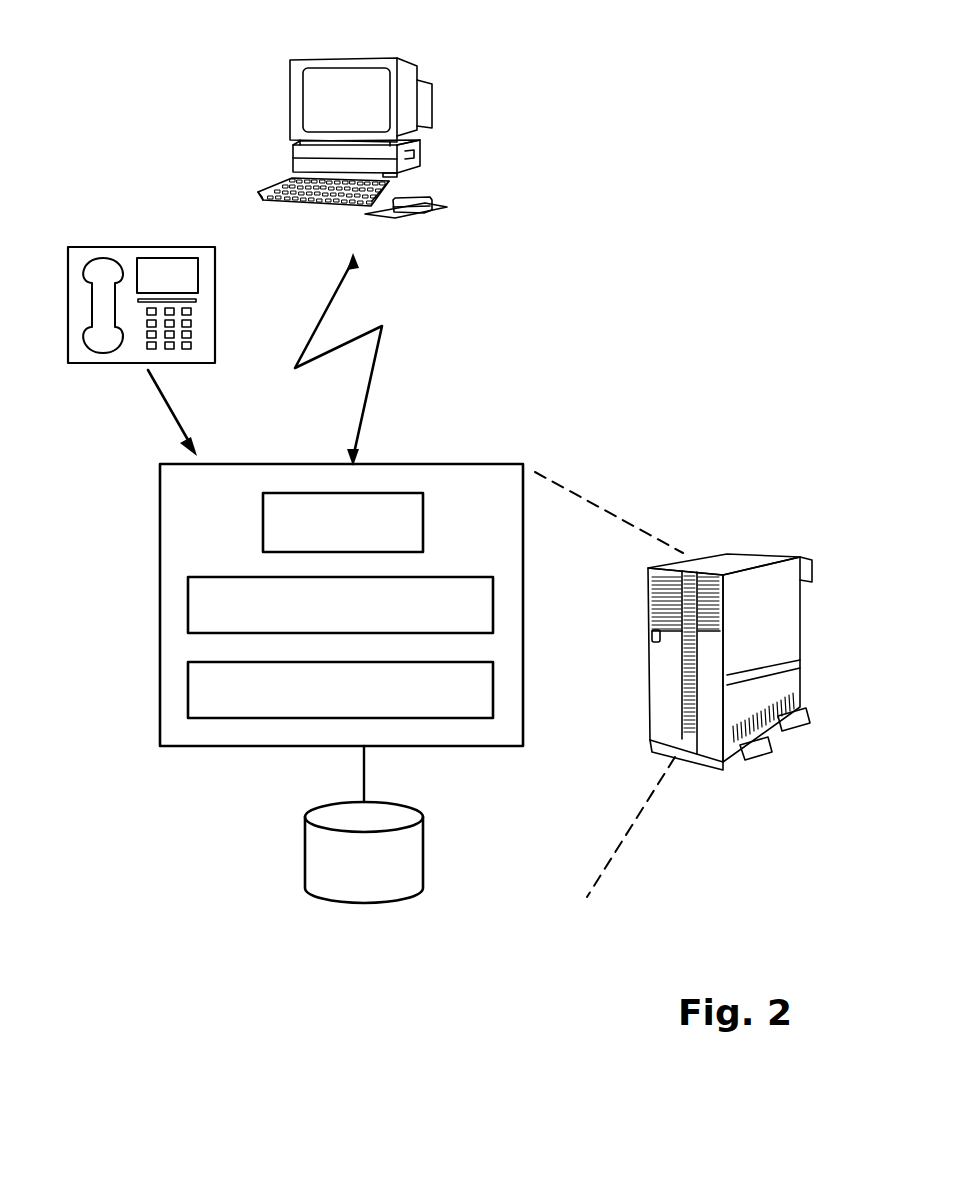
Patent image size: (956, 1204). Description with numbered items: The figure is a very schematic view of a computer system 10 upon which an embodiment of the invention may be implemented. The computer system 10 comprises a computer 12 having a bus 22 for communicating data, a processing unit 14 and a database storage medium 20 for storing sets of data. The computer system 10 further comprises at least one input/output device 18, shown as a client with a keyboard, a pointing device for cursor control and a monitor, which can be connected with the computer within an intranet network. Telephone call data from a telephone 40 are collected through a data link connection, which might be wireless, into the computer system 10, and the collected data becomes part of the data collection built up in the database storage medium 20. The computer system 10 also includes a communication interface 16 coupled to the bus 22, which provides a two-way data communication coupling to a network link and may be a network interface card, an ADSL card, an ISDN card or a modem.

The computer system 10 is at (580, 327).
The computer 12 is at (727, 553).
The processing unit 14 is at (494, 605).
The communication interface 16 is at (421, 493).
The input/output device 18 is at (452, 139).
The database storage medium 20 is at (423, 855).
The bus 22 is at (494, 692).
The telephone 40 is at (107, 237).